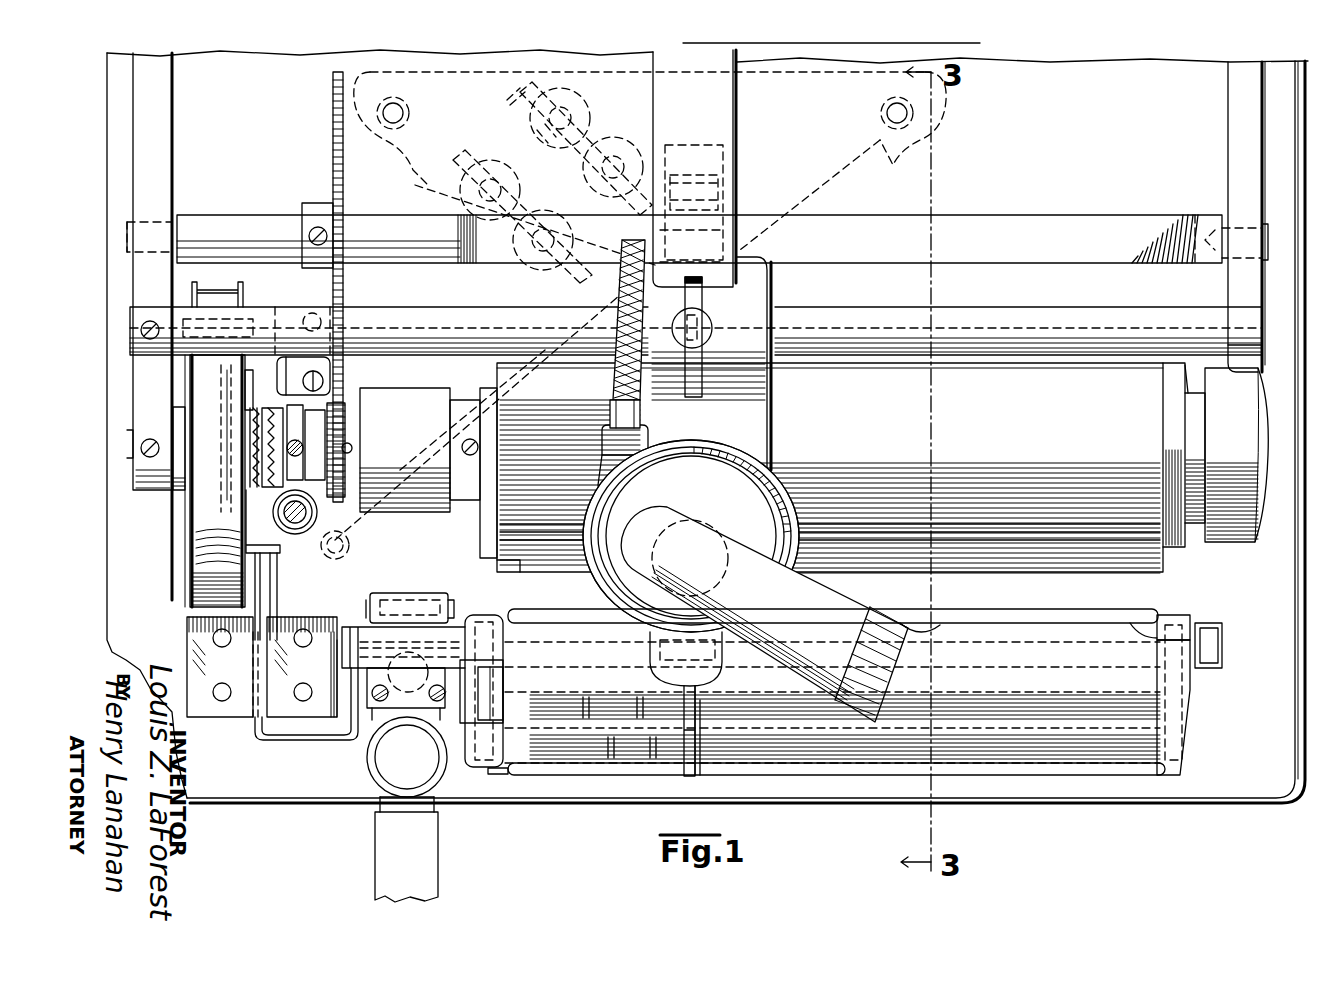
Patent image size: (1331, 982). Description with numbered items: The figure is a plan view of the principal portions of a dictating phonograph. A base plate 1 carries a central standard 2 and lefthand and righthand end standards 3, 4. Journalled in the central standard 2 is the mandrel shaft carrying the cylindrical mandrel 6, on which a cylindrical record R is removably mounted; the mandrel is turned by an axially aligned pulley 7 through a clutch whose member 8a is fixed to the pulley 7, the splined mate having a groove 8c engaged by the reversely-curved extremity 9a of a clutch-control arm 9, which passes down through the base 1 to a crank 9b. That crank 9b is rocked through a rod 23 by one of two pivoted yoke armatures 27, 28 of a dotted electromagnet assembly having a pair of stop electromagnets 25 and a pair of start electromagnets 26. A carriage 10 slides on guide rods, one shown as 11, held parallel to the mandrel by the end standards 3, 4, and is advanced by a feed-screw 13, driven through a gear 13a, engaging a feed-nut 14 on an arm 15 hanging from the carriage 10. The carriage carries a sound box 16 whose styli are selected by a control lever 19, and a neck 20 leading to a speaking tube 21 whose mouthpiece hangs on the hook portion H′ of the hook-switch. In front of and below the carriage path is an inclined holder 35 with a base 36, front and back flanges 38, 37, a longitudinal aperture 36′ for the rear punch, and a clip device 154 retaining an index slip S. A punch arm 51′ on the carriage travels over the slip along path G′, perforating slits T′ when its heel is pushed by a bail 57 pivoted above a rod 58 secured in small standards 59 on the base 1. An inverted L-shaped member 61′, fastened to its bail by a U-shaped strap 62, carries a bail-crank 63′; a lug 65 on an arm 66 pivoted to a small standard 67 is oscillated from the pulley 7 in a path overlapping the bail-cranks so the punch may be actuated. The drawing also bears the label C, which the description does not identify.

The base plate 1 is at (107, 568).
The central standard 2 is at (404, 394).
The lefthand end standard 3 is at (145, 392).
The righthand end standard 4 is at (1238, 155).
The cylindrical mandrel 6 is at (1165, 546).
The pulley 7 is at (243, 292).
The clutch member 8a is at (252, 455).
The groove 8c is at (275, 447).
The clutch-control arm 9 is at (298, 526).
The reversely-curved extremity 9a is at (298, 436).
The crank 9b is at (350, 556).
The carriage 10 is at (732, 118).
The guide rod 11 is at (844, 312).
The feed-screw 13 is at (1040, 222).
The gear 13a is at (336, 90).
The feed-nut 14 is at (720, 190).
The arm 15 is at (730, 147).
The sound box 16 is at (758, 478).
The control lever 19 is at (702, 320).
The neck 20 is at (764, 614).
The speaking tube 21 is at (928, 630).
The rod 23 is at (370, 527).
The stop electromagnets 25 is at (542, 210).
The start electromagnets 26 is at (552, 160).
The yoke armature 27 is at (482, 166).
The yoke armature 28 is at (512, 114).
The holder 35 is at (1178, 613).
The base 36 is at (500, 777).
The longitudinal aperture 36′ is at (558, 696).
The back flange 37 is at (538, 612).
The front flange 38 is at (572, 776).
The punch arm 51′ is at (684, 684).
The bail 57 is at (1206, 624).
The rod 58 is at (453, 630).
The small standards 59 is at (235, 660).
The inverted L-shaped member 61′ is at (222, 712).
The U-shaped strap 62 is at (272, 740).
The bail-crank 63′ is at (262, 582).
The lug 65 is at (264, 548).
The arm 66 is at (246, 514).
The small standard 67 is at (330, 362).
The clip device 154 is at (467, 713).
The crank bar C is at (622, 350).
The cylindrical record R is at (830, 462).
The index slip S is at (1186, 702).
The punch path G′ is at (1095, 715).
The slits T′ is at (638, 697).
The hook portion H′ is at (440, 842).